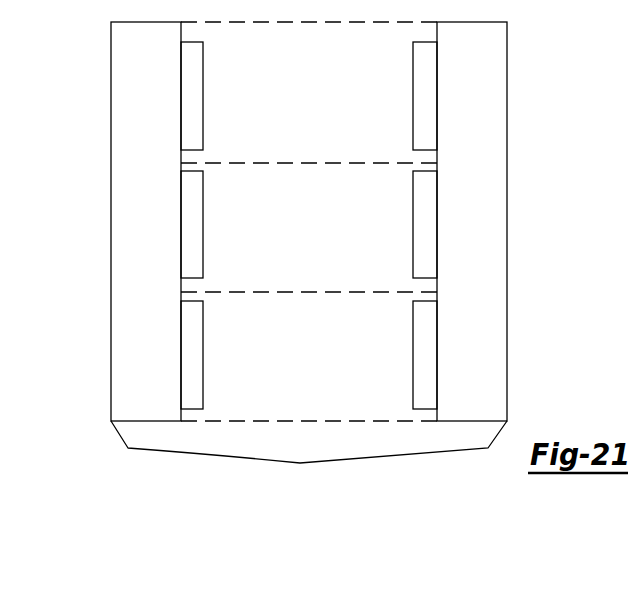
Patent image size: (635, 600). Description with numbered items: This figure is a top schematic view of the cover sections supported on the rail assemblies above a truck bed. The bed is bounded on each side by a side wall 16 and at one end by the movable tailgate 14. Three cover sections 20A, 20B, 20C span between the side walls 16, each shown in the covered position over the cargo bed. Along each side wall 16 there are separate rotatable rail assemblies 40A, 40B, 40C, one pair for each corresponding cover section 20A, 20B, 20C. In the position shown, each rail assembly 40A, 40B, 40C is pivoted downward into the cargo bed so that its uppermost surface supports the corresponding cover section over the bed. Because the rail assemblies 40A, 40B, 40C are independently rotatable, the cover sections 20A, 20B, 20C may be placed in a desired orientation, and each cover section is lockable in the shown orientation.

The movable tailgate 14 is at (298, 453).
The side wall 16 is at (111, 312).
The cover section 20A is at (299, 371).
The cover section 20B is at (296, 243).
The cover section 20C is at (296, 114).
The rotatable rail assembly 40A is at (191, 348).
The rotatable rail assembly 40B is at (191, 220).
The rotatable rail assembly 40C is at (191, 91).